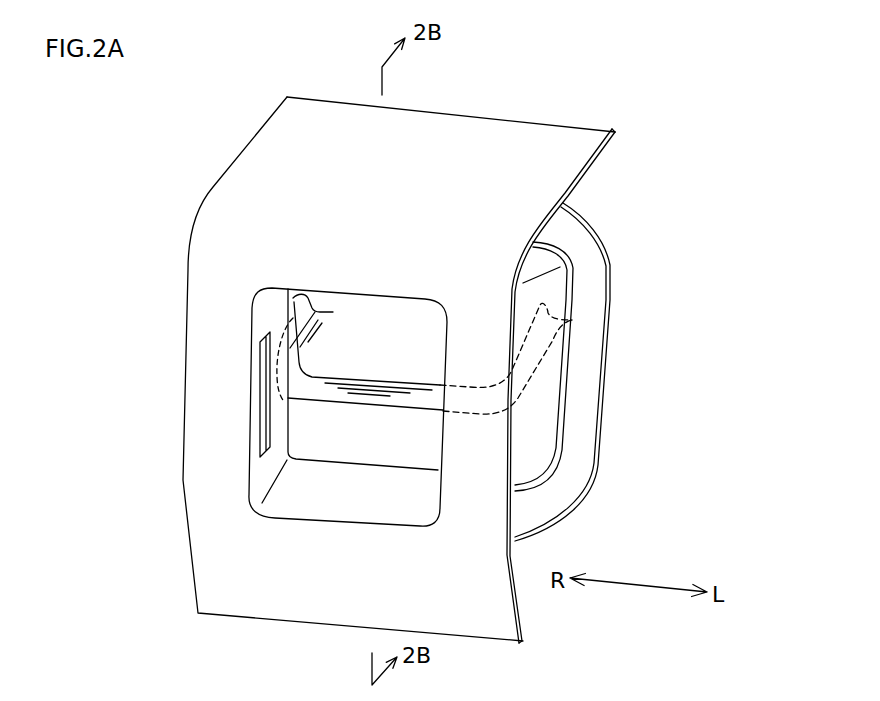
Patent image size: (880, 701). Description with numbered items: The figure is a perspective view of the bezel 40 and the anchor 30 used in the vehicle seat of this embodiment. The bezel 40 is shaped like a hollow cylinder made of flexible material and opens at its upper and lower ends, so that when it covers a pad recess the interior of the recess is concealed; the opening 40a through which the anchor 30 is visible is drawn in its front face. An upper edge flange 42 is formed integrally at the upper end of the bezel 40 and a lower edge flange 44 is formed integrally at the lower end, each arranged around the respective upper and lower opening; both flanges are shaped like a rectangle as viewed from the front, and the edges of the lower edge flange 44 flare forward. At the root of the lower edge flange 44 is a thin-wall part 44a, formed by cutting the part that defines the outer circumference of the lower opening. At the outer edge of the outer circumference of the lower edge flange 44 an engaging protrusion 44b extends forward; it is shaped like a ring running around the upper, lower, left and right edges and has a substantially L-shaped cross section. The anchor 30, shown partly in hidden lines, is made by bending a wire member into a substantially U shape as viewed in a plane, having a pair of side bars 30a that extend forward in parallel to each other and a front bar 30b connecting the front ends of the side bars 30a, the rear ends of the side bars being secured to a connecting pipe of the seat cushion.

The bezel 40 is at (199, 168).
The opening 40a is at (335, 497).
The upper edge flange 42 is at (277, 148).
The lower edge flange 44 is at (609, 353).
The thin-wall part 44a is at (583, 290).
The engaging protrusion 44b is at (593, 223).
The anchor 30 is at (531, 393).
The side bars 30a is at (527, 365).
The front bar 30b is at (388, 403).